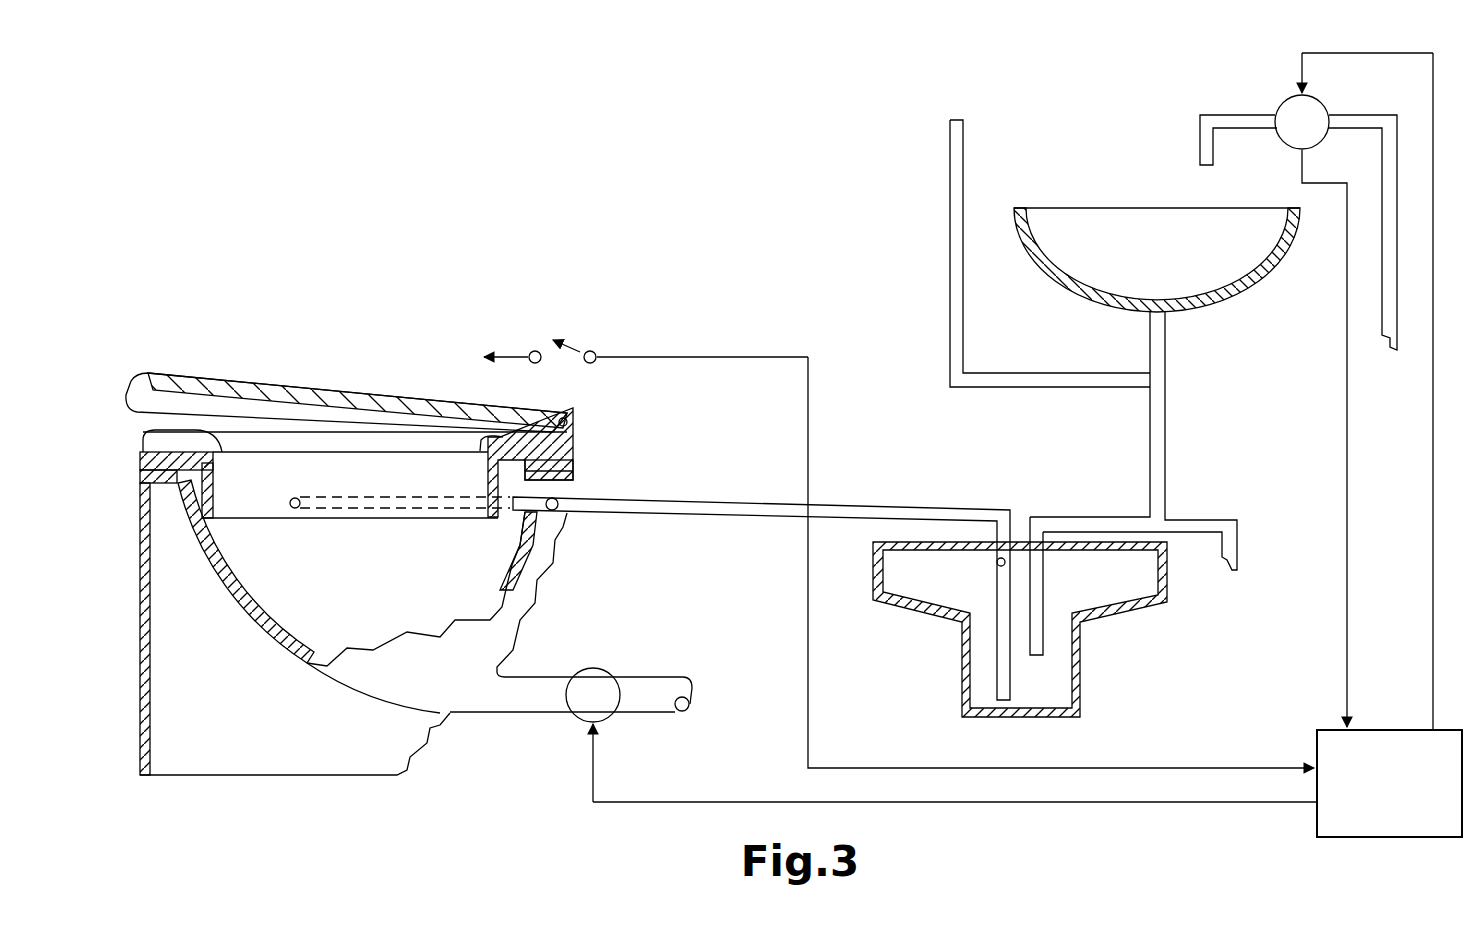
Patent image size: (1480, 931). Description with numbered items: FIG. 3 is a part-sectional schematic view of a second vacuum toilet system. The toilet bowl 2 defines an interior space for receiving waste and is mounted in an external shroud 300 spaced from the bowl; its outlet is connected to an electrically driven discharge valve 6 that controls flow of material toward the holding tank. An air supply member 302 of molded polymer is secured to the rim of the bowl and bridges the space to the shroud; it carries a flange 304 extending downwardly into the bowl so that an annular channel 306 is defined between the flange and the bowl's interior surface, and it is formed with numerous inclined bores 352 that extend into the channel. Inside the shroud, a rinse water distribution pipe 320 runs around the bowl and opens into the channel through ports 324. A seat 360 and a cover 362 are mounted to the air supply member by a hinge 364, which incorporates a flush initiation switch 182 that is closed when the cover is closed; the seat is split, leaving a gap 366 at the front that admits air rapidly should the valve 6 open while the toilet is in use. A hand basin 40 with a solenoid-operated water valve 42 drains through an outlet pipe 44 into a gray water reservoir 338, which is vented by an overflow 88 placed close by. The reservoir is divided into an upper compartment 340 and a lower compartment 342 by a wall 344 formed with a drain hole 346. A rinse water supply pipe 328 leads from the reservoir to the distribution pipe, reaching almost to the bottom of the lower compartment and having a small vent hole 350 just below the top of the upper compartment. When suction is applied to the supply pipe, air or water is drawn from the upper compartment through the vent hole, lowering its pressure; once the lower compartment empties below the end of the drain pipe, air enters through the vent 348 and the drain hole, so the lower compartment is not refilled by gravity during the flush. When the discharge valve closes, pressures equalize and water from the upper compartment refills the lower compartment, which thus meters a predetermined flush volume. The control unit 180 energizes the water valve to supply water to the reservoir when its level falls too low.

The toilet bowl 2 is at (250, 628).
The discharge valve 6 is at (592, 668).
The hand basin 40 is at (1243, 287).
The water valve 42 is at (1283, 102).
The outlet pipe 44 is at (1166, 357).
The overflow 88 is at (1238, 547).
The control unit 180 is at (1315, 740).
The flush initiation switch 182 is at (573, 350).
The external shroud 300 is at (300, 744).
The air supply member 302 is at (577, 457).
The flange 304 is at (480, 515).
The annular channel 306 is at (192, 497).
The rinse water distribution pipe 320 is at (377, 512).
The ports 324 is at (287, 504).
The rinse water supply pipe 328 is at (908, 505).
The gray water reservoir 338 is at (1167, 560).
The upper compartment 340 is at (1133, 583).
The lower compartment 342 is at (1047, 682).
The wall 344 is at (932, 590).
The drain hole 346 is at (1057, 612).
The vent 348 is at (963, 337).
The vent hole 350 is at (998, 563).
The bores 352 is at (137, 475).
The seat 360 is at (393, 430).
The cover 362 is at (300, 385).
The hinge 364 is at (570, 412).
The gap 366 is at (160, 440).